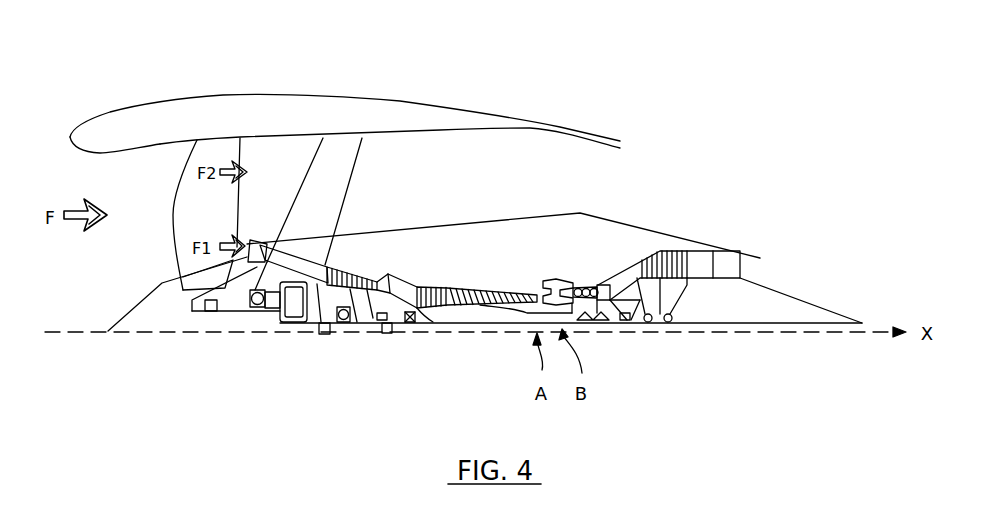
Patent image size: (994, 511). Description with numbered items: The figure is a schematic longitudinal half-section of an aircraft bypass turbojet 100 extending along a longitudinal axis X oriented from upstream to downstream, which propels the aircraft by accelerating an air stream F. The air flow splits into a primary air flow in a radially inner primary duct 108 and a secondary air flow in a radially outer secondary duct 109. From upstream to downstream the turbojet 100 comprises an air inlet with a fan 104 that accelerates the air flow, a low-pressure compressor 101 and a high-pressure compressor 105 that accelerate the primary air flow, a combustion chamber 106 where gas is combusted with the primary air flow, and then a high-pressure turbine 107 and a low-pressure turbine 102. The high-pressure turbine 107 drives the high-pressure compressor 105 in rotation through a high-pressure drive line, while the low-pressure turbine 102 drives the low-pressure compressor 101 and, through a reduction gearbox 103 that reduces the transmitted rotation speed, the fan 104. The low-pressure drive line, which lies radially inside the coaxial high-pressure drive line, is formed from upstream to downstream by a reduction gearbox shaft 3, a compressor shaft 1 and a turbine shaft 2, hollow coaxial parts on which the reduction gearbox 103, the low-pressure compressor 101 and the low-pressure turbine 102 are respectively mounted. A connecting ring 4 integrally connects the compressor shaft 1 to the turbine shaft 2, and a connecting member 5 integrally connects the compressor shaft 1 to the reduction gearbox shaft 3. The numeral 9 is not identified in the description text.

The aircraft bypass turbojet 100 is at (90, 108).
The fan 104 is at (215, 138).
The secondary duct 109 is at (428, 131).
The reduction gearbox 103 is at (297, 285).
The primary duct 108 is at (316, 252).
The low-pressure compressor 101 is at (350, 245).
The high-pressure compressor 105 is at (486, 266).
The combustion chamber 106 is at (554, 262).
The high-pressure turbine 107 is at (585, 264).
The low-pressure turbine 102 is at (667, 237).
The fairing 9 is at (197, 311).
The reduction gearbox shaft 3 is at (293, 330).
The compressor shaft 1 is at (355, 330).
The connecting member 5 is at (325, 330).
The connecting ring 4 is at (382, 328).
The turbine shaft 2 is at (442, 330).